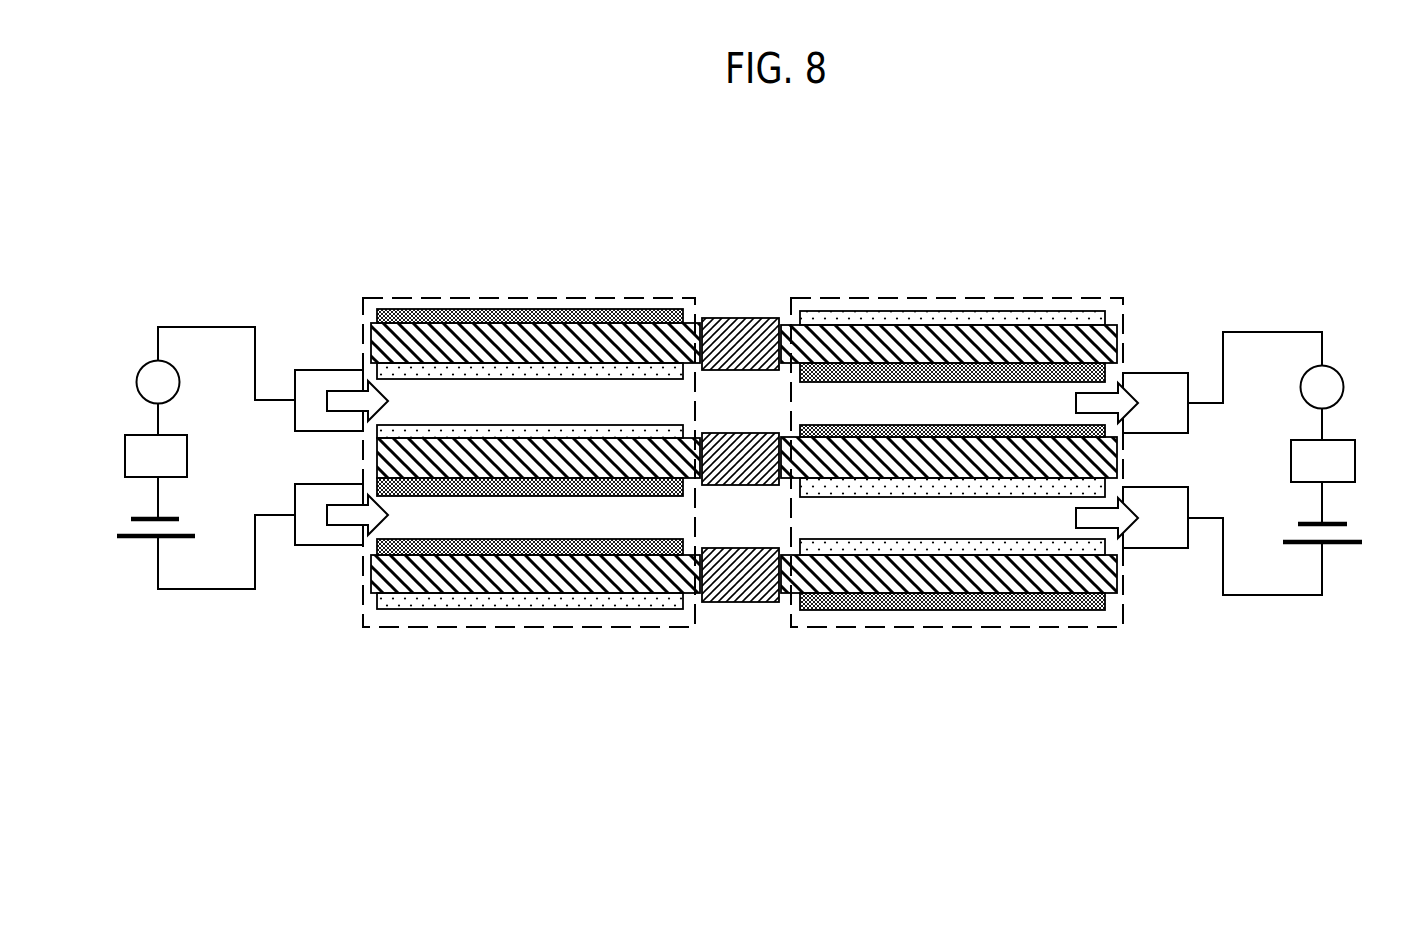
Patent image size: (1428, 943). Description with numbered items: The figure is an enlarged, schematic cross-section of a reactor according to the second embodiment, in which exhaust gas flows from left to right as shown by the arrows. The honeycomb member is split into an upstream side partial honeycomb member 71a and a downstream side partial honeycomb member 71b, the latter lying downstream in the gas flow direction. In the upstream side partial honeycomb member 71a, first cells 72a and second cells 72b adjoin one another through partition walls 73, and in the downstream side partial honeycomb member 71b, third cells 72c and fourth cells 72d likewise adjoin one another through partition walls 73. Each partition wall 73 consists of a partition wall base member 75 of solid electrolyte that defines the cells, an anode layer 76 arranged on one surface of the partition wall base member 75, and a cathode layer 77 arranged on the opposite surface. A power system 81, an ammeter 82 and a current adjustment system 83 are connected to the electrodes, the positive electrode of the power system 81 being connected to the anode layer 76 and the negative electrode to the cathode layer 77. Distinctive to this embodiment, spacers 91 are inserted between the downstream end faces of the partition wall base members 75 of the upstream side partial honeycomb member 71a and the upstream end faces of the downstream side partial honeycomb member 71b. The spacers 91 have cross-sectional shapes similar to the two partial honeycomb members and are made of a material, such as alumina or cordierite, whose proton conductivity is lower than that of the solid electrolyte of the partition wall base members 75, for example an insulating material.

The upstream side partial honeycomb member 71a is at (690, 300).
The downstream side partial honeycomb member 71b is at (1110, 300).
The first cells 72a is at (622, 402).
The second cells 72b is at (451, 515).
The third cells 72c is at (1028, 405).
The fourth cells 72d is at (885, 518).
The partition wall 73 is at (744, 461).
The partition wall base member 75 is at (518, 345).
The anode layer 76 is at (560, 372).
The cathode layer 77 is at (472, 318).
The power system 81 is at (135, 540).
The ammeter 82 is at (140, 370).
The current adjustment system 83 is at (133, 435).
The spacer 91 is at (735, 318).